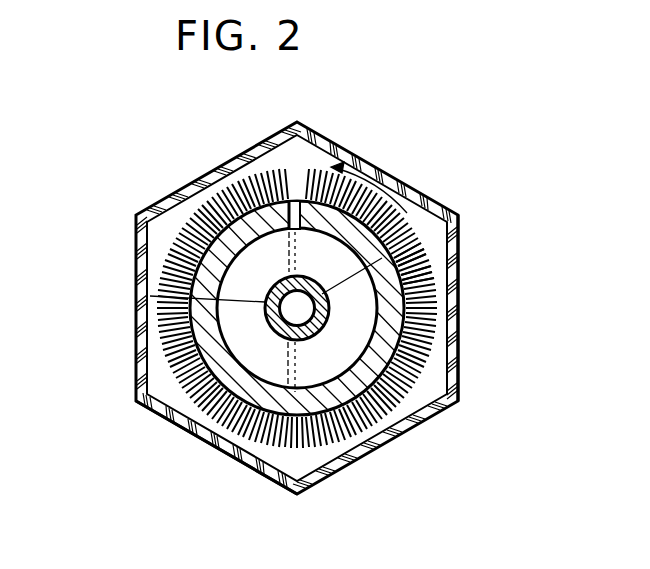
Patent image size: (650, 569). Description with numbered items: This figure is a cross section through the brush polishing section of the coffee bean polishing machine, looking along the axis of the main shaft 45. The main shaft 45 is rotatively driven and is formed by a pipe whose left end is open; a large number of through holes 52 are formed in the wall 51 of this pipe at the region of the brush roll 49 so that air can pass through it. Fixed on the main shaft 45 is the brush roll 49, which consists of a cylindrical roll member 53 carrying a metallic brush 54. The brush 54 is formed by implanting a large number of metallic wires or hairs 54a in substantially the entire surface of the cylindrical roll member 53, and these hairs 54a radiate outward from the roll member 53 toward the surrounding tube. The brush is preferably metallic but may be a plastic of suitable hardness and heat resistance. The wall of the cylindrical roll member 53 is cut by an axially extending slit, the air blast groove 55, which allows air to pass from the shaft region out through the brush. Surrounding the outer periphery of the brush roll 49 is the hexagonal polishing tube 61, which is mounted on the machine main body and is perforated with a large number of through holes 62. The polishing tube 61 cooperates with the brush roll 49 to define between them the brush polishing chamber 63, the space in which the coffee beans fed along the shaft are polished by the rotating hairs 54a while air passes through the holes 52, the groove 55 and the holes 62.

The main shaft 45 is at (150, 296).
The brush roll 49 is at (307, 158).
The wall 51 is at (317, 320).
The through holes 52 is at (412, 233).
The cylindrical roll member 53 is at (263, 397).
The metallic brush 54 is at (431, 253).
The metallic wires or hairs 54a is at (426, 283).
The air blast groove 55 is at (292, 200).
The hexagonal polishing tube 61 is at (458, 313).
The through holes 62 is at (138, 385).
The brush polishing chamber 63 is at (193, 412).